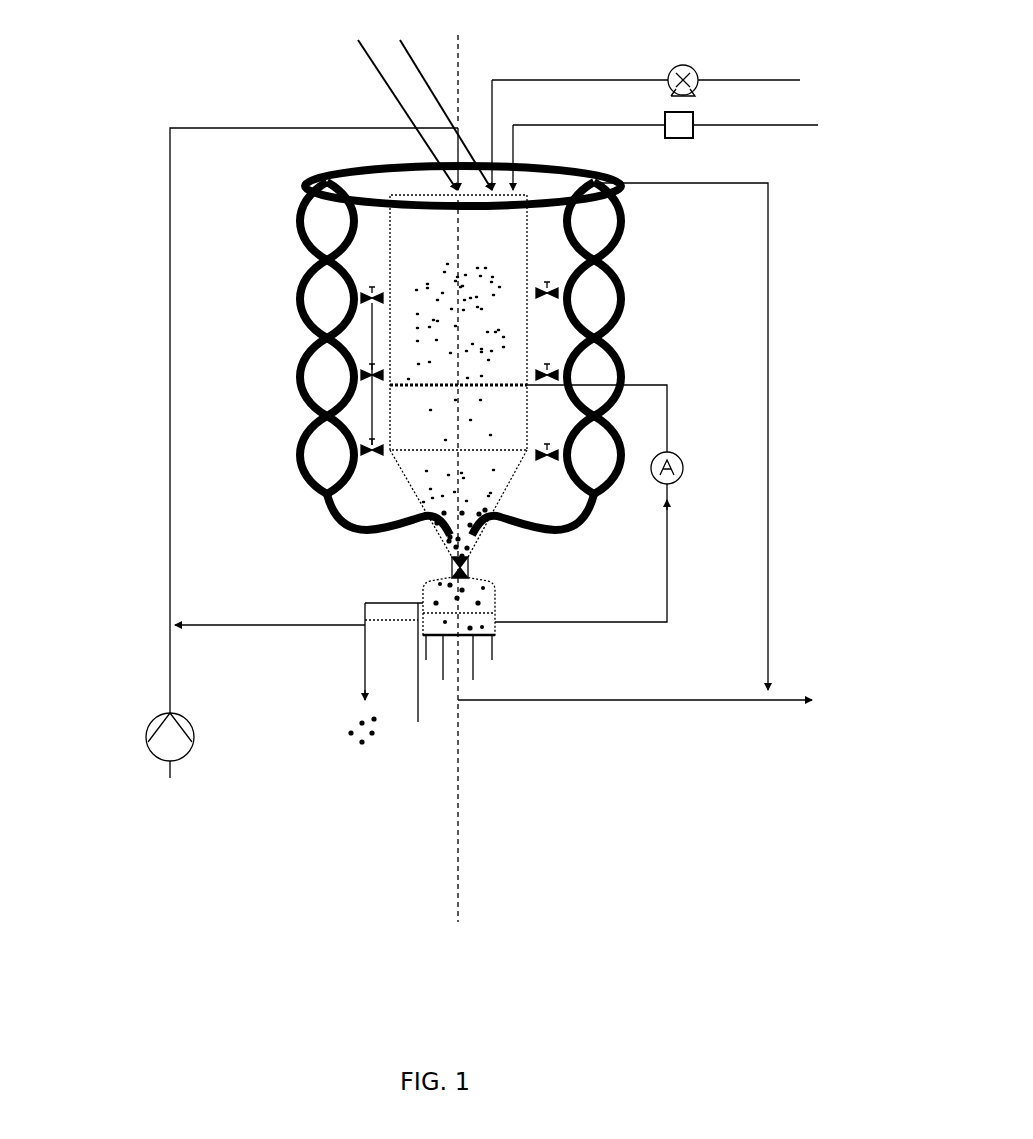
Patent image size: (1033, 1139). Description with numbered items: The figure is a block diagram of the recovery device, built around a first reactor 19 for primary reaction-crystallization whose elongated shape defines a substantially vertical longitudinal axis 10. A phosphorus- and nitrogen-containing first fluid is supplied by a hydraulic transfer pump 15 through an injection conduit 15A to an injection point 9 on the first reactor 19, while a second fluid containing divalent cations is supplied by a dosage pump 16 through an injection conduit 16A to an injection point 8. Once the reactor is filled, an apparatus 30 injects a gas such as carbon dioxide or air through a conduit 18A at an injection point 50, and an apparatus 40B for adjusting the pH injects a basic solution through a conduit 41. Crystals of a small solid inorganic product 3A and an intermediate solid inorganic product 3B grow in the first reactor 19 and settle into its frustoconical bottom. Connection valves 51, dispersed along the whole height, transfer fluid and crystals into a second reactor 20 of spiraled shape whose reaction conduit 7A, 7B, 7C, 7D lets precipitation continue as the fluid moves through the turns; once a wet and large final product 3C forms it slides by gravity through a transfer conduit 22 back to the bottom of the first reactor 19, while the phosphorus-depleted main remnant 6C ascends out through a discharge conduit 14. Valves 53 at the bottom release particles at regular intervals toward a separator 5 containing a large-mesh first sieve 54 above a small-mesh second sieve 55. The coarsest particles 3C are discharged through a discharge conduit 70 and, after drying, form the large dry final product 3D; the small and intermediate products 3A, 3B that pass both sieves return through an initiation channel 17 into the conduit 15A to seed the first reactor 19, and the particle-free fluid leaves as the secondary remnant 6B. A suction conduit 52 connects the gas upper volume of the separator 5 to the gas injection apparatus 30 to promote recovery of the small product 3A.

The small solid inorganic product 3A is at (445, 260).
The intermediate solid inorganic product 3B is at (493, 345).
The wet and large precipitated solid inorganic final product 3C is at (470, 547).
The large and dry precipitated solid inorganic final product 3D is at (364, 755).
The apparatus for separating particles and discharging the secondary remnant 5 is at (500, 613).
The secondary remnant 6B is at (642, 700).
The main remnant 6C is at (768, 665).
The conduit of the second reactor 7A is at (300, 207).
The conduit of the second reactor 7B is at (300, 315).
The conduit of the second reactor 7C is at (630, 207).
The conduit of the second reactor 7D is at (630, 315).
The injection point 8 is at (441, 100).
The injection point 9 is at (396, 101).
The substantially vertical longitudinal axis 10 is at (455, 495).
The discharge conduit 14 is at (768, 232).
The apparatus for providing the first fluid 15 is at (146, 738).
The injection conduit 15A is at (170, 377).
The apparatus for providing the second fluid 16 is at (667, 127).
The injection conduit 16A is at (607, 80).
The initiation channel 17 is at (228, 625).
The conduit for injecting gas 18A is at (667, 408).
The first reactor 19 is at (487, 232).
The second reactor 20 is at (300, 377).
The transfer conduit 22 is at (330, 527).
The apparatus for injecting a gas 30 is at (683, 463).
The apparatus for adjusting the pH 40B is at (692, 151).
The conduit 41 is at (607, 125).
The injection point 50 is at (527, 387).
The connection valve 51 is at (680, 447).
The conduit for suction of the gas upper volume 52 is at (668, 600).
The valve 53 is at (450, 567).
The first sieve 54 is at (423, 592).
The second sieve 55 is at (418, 612).
The discharge conduit 70 is at (363, 658).